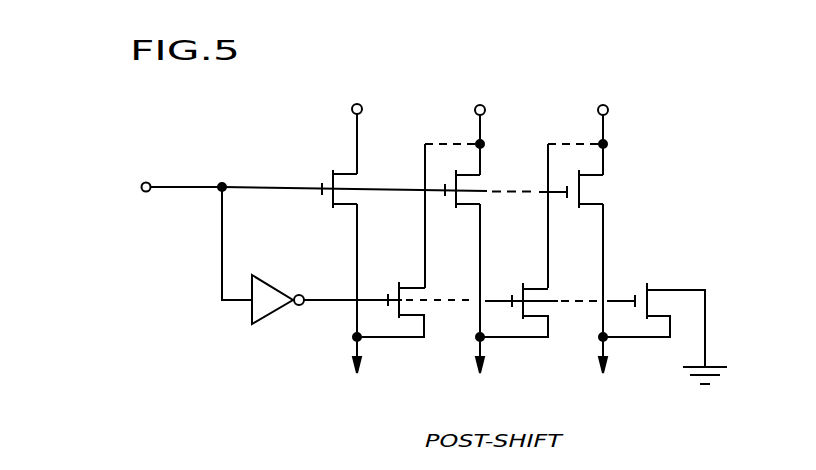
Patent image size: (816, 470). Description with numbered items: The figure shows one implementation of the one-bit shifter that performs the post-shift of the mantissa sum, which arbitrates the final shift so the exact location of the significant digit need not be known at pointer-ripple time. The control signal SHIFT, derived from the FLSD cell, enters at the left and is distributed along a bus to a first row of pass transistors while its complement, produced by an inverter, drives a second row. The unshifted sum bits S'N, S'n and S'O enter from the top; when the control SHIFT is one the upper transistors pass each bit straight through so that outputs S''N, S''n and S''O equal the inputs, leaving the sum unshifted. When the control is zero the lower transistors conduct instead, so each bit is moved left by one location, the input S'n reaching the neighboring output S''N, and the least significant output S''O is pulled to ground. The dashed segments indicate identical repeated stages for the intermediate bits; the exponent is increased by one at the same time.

The post-shift control signal SHIFT is at (125, 167).
The sum bit input N S'N is at (350, 138).
The sum bit input n S'n is at (456, 178).
The sum bit input O S'O is at (580, 178).
The post-shifted sum bit output N S''N is at (407, 310).
The post-shifted sum bit output n S''n is at (532, 310).
The post-shifted sum bit output O S''O is at (658, 310).